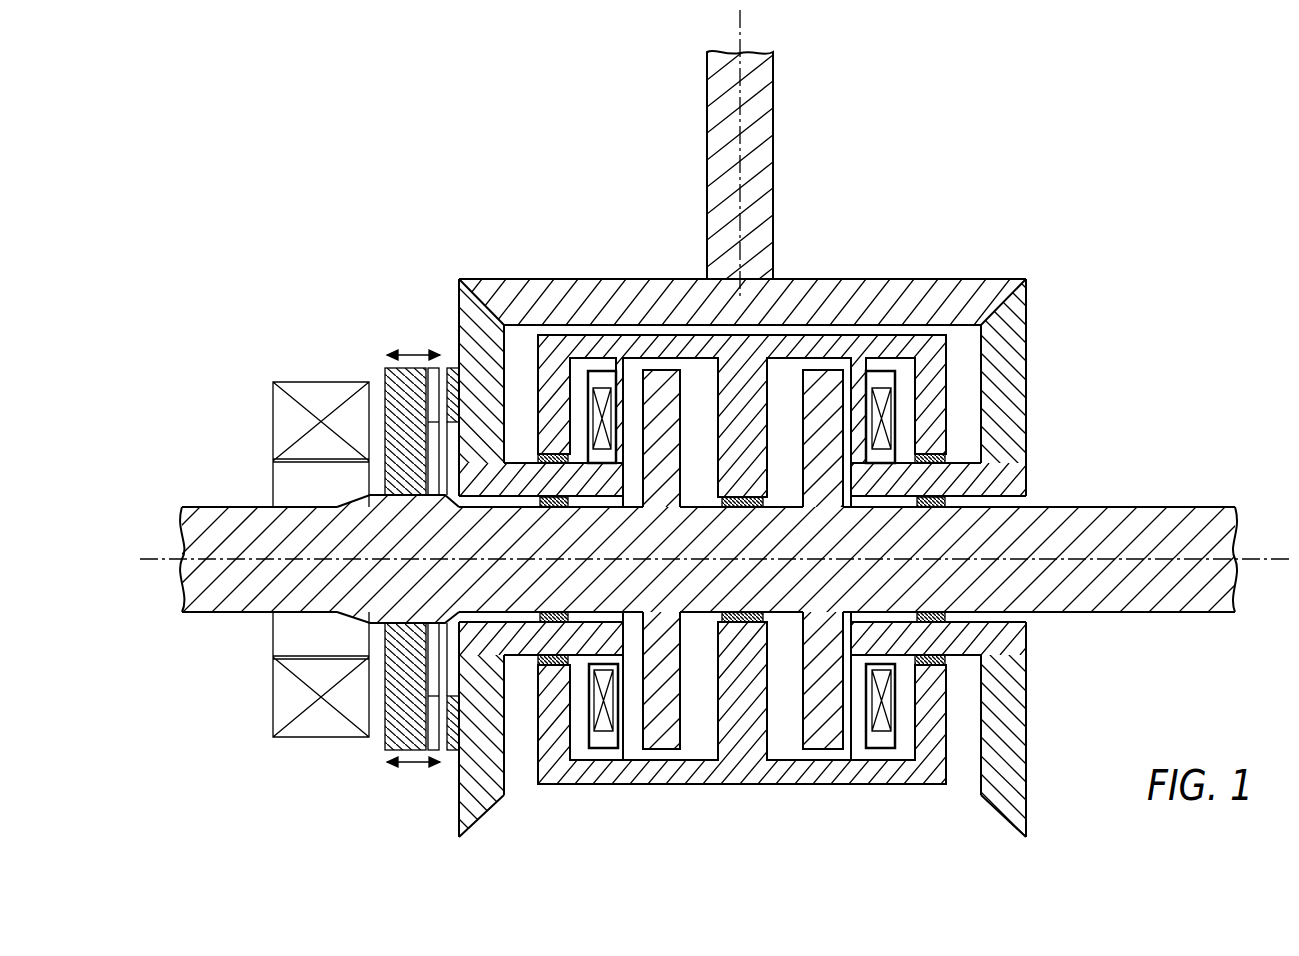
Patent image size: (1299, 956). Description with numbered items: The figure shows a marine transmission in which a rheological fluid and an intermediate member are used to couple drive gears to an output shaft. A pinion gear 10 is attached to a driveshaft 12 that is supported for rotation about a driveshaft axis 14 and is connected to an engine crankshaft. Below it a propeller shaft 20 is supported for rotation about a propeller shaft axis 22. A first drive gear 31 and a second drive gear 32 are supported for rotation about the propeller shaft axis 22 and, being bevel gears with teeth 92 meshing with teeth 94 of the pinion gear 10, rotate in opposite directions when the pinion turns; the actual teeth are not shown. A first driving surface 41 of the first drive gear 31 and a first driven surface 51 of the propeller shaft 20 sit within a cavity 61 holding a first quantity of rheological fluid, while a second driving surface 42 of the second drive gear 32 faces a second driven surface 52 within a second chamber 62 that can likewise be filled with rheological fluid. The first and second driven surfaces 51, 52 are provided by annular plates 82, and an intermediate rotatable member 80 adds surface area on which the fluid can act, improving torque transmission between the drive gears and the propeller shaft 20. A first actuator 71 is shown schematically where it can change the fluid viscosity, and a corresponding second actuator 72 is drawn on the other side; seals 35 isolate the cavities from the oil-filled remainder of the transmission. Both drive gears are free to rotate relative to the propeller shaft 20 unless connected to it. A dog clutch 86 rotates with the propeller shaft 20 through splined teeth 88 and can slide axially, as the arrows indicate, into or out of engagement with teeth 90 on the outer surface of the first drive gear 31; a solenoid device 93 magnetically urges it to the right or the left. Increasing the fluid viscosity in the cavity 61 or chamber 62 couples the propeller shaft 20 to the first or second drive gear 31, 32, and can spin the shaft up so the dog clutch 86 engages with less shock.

The pinion gear 10 is at (891, 281).
The driveshaft 12 is at (775, 125).
The driveshaft axis 14 is at (741, 25).
The propeller shaft 20 is at (1136, 506).
The propeller shaft axis 22 is at (1266, 558).
The first drive gear 31 is at (462, 294).
The second drive gear 32 is at (1028, 424).
The seals 35 is at (570, 500).
The first driving surface 41 is at (588, 418).
The second driving surface 42 is at (886, 369).
The first driven surface 51 is at (641, 403).
The second driven surface 52 is at (842, 371).
The cavity 61 is at (700, 513).
The second chamber 62 is at (783, 512).
The first actuator 71 is at (602, 446).
The second coil 72 is at (889, 428).
The intermediate rotatable member 80 is at (704, 334).
The annular plates 82 is at (672, 463).
The dog clutch 86 is at (385, 375).
The splined teeth 88 is at (401, 501).
The teeth 90 is at (452, 370).
The teeth 92 is at (474, 297).
The solenoid device 93 is at (273, 425).
The teeth 94 is at (494, 307).